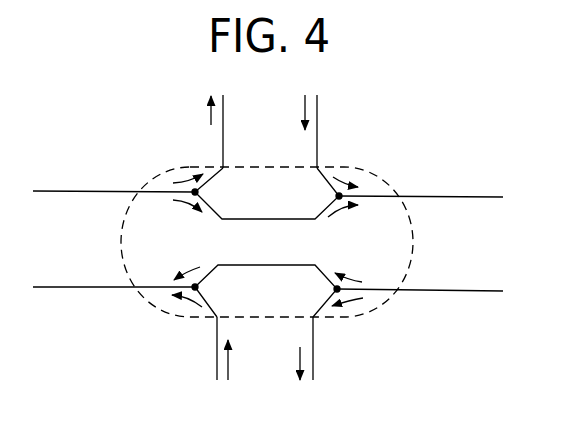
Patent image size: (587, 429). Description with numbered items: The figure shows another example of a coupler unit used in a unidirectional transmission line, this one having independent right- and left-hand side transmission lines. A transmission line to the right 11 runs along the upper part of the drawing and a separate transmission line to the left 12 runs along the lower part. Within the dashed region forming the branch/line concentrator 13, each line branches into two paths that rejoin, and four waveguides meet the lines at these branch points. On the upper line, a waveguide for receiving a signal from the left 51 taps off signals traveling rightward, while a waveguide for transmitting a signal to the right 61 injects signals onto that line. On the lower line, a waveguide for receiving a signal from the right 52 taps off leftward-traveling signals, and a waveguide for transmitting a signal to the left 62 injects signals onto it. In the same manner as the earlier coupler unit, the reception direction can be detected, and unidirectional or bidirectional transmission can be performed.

The transmission line to the right 11 is at (65, 191).
The transmission line to the left 12 is at (62, 290).
The branch/line concentrator 13 is at (388, 185).
The waveguide for receiving a signal from the left 51 is at (223, 141).
The waveguide for transmitting a signal to the right 61 is at (317, 143).
The waveguide for transmitting a signal to the left 62 is at (217, 357).
The waveguide for receiving a signal from the right 52 is at (315, 355).